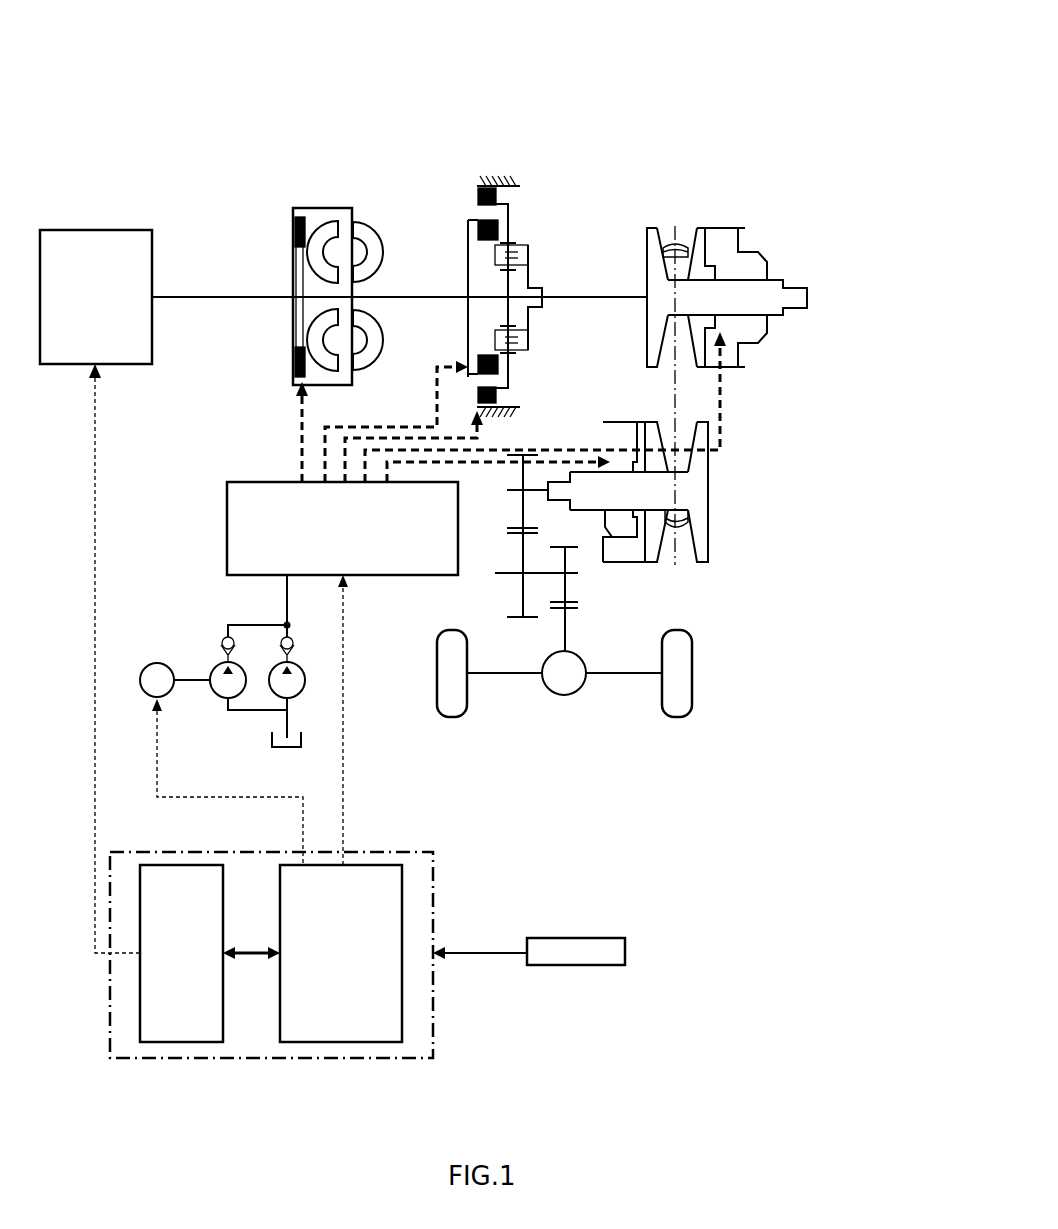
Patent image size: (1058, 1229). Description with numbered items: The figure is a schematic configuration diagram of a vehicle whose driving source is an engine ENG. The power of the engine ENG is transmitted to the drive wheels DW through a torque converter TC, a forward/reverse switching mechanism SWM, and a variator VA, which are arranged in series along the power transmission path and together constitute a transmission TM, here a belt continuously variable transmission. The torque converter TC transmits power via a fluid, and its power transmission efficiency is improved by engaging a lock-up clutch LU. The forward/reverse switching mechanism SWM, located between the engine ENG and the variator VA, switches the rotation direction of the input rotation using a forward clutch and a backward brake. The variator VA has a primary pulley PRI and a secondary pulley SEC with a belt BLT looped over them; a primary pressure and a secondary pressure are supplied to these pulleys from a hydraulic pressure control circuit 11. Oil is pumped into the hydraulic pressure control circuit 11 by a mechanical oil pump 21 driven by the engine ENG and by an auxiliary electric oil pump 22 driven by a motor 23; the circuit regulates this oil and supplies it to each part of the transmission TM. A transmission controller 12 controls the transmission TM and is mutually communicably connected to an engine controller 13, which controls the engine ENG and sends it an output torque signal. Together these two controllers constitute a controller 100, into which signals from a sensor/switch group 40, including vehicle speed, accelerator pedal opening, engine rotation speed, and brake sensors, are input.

The transmission TM is at (772, 66).
The engine ENG is at (93, 228).
The torque converter TC is at (335, 206).
The lock-up clutch LU is at (297, 374).
The forward/reverse switching mechanism SWM is at (482, 251).
The variator VA is at (688, 370).
The primary pulley PRI is at (767, 252).
The secondary pulley SEC is at (708, 521).
The belt BLT is at (682, 530).
The drive wheels DW is at (437, 673).
The hydraulic pressure control circuit 11 is at (227, 523).
The mechanical oil pump 21 is at (300, 695).
The electric oil pump 22 is at (215, 696).
The motor 23 is at (153, 663).
The transmission controller 12 is at (343, 1042).
The engine controller 13 is at (140, 1005).
The controller 100 is at (251, 985).
The sensor/switch group 40 is at (625, 951).